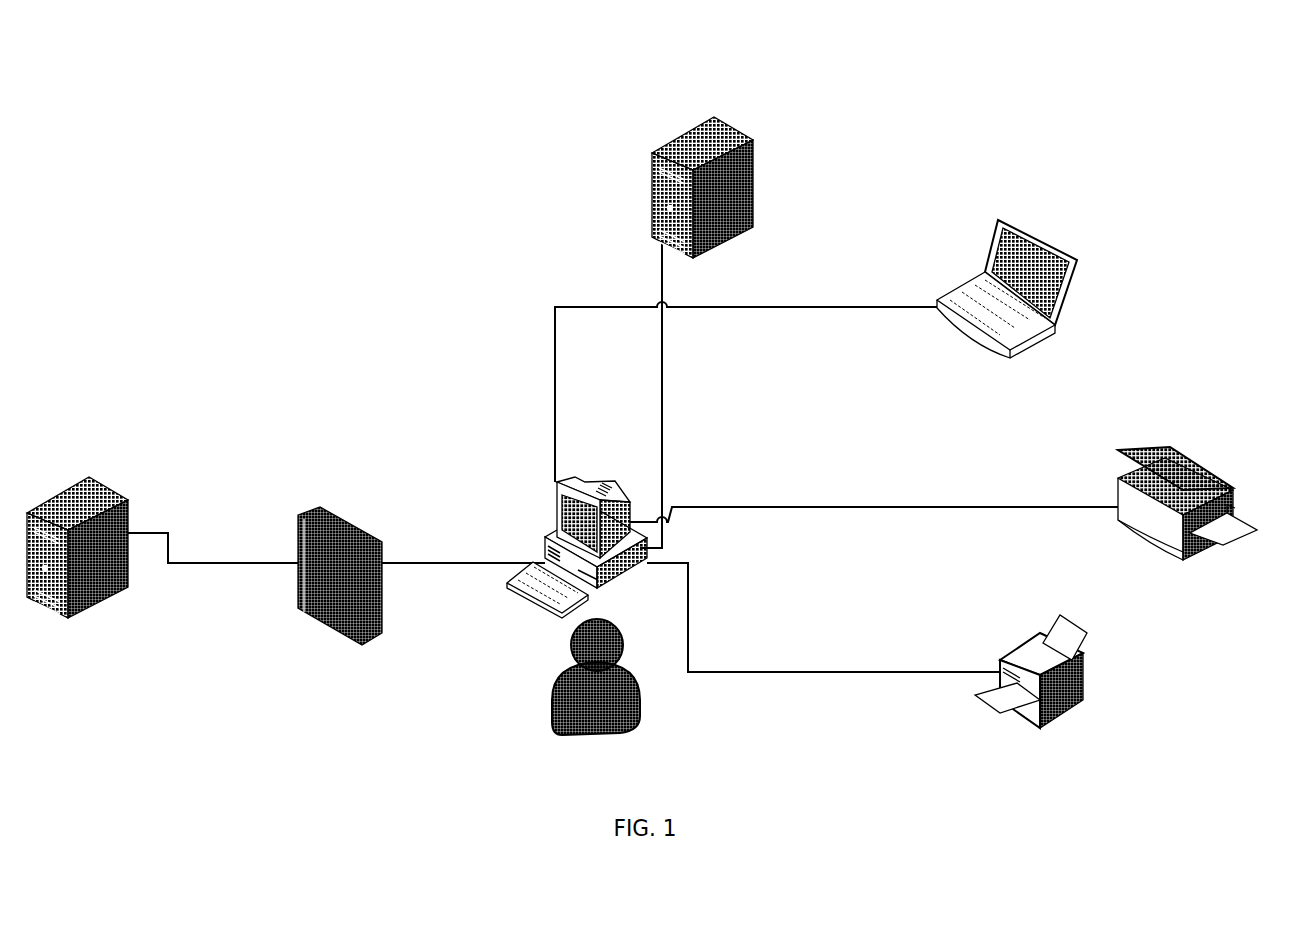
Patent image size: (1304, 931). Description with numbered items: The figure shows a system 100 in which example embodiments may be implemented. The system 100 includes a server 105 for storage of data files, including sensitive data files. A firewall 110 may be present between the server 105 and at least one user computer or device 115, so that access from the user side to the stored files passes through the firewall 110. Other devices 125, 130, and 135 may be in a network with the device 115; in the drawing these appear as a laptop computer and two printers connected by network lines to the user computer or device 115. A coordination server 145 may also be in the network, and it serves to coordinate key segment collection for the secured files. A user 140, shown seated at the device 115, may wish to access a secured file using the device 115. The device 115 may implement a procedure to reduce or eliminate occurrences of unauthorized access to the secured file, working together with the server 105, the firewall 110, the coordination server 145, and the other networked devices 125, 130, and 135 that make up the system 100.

The system 100 is at (948, 165).
The server 105 is at (113, 488).
The firewall 110 is at (368, 530).
The user computer or device 115 is at (552, 500).
The device 125 is at (1038, 230).
The device 130 is at (1208, 468).
The device 135 is at (1088, 672).
The user 140 is at (547, 685).
The coordination server 145 is at (738, 125).